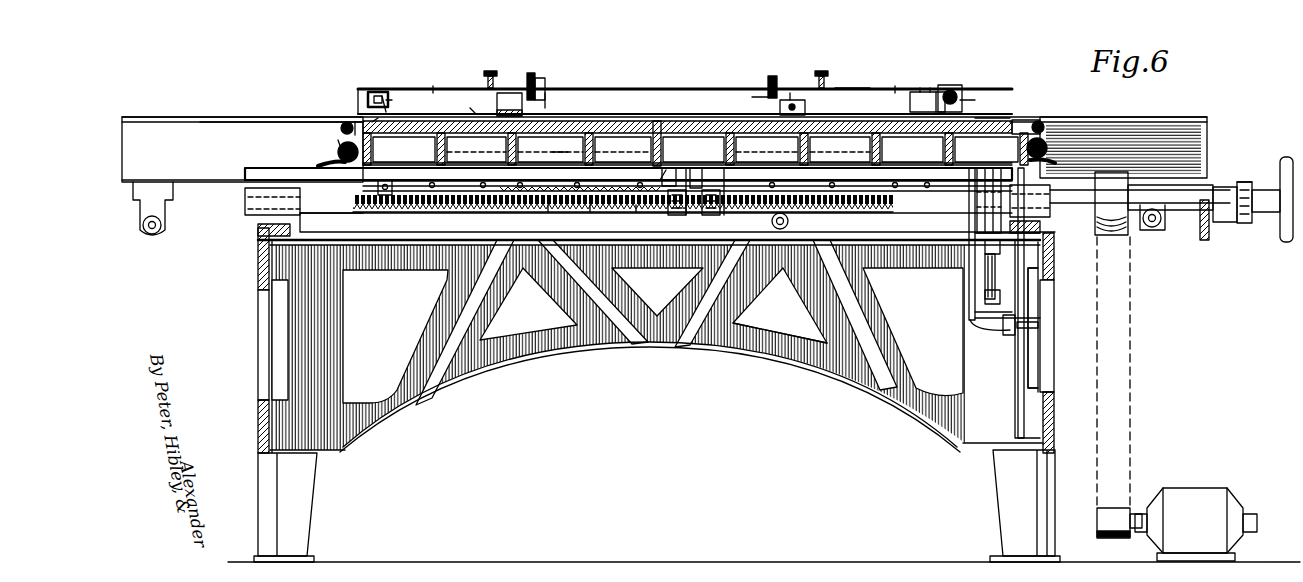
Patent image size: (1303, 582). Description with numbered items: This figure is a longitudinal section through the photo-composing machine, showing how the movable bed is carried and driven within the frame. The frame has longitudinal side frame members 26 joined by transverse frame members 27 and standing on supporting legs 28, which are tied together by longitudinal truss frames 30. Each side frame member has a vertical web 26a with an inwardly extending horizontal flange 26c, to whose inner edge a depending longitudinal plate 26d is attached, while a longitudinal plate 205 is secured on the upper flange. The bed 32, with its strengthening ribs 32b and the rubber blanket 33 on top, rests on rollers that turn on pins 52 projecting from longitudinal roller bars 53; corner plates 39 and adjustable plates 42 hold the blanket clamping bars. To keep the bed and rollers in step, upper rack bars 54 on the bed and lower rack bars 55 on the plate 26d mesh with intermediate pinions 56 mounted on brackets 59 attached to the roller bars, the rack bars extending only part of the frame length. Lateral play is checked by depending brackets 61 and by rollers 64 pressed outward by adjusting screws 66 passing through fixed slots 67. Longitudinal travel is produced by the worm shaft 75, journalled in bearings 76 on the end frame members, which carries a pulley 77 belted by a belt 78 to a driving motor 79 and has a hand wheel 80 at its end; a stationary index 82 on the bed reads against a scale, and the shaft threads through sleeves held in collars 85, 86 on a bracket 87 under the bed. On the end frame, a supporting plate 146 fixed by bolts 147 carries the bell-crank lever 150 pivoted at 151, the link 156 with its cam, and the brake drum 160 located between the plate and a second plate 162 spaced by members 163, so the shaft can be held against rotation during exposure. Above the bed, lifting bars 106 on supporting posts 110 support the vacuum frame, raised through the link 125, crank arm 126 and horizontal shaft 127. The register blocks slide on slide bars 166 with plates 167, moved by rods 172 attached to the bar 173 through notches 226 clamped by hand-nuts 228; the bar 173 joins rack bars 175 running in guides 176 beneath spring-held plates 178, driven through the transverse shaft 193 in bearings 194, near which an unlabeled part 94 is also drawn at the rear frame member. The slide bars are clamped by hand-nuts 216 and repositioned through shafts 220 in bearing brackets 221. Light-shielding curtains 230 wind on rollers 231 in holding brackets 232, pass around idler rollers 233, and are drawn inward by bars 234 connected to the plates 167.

The longitudinal side frame members 26 is at (148, 132).
The longitudinal plates 205 is at (183, 118).
The vertical webs 26a is at (215, 143).
The horizontal flanges 26c is at (192, 178).
The longitudinal plates 26d is at (510, 203).
The transverse frame members 27 is at (258, 278).
The supporting legs 28 is at (300, 495).
The longitudinal truss frames 30 is at (712, 350).
The bed 32 is at (619, 125).
The strengthening ribs 32b is at (546, 147).
The rubber blanket 33 is at (667, 127).
The plates 39 is at (378, 118).
The plates 42 is at (1018, 123).
The pins 52 is at (265, 172).
The longitudinal roller bars 53 is at (258, 175).
The upper rack bars 54 is at (548, 205).
The lower rack bars 55 is at (590, 205).
The intermediate meshing pinions 56 is at (636, 205).
The brackets 59 is at (666, 170).
The depending brackets 61 is at (1250, 182).
The rollers 64 is at (400, 185).
The adjusting screws 66 is at (330, 208).
The fixed slots 67 is at (362, 195).
The worm shaft 75 is at (410, 240).
The bearings 76 is at (255, 200).
The pulley 77 is at (1118, 235).
The belt 78 is at (1130, 395).
The driving motor 79 is at (1195, 495).
The hand wheel 80 is at (1290, 238).
The stationary index 82 is at (1240, 190).
The collar 85 is at (711, 215).
The collar 86 is at (679, 215).
The bracket 87 is at (707, 178).
The bracket 94 is at (985, 120).
The lifting bars 106 is at (534, 78).
The supporting posts 110 is at (540, 83).
The link 125 is at (738, 318).
The crank arm 126 is at (772, 240).
The horizontal shaft 127 is at (780, 326).
The supporting plate 146 is at (1040, 305).
The bolts 147 is at (1045, 335).
The bell-crank lever 150 is at (985, 275).
The pivot 151 is at (983, 297).
The link 156 is at (975, 245).
The brake drum 160 is at (990, 180).
The plate 162 is at (970, 330).
The members 163 is at (975, 315).
The slide bars 166 is at (503, 92).
The plates 167 is at (695, 149).
The rods 172 is at (855, 74).
The longitudinally extending bar 173 is at (663, 90).
The rack bars 175 is at (382, 96).
The guides 176 is at (386, 100).
The plates 178 is at (368, 90).
The transverse shaft 193 is at (980, 117).
The bearings 194 is at (957, 100).
The hand-nuts 216 is at (546, 100).
The shafts 220 is at (152, 232).
The bearing brackets 221 is at (153, 212).
The notches 226 is at (433, 86).
The hand-nuts 228 is at (490, 72).
The curtains 230 is at (337, 152).
The rollers 231 is at (340, 147).
The holding brackets 232 is at (355, 128).
The idler rollers 233 is at (349, 131).
The bars 234 is at (325, 164).